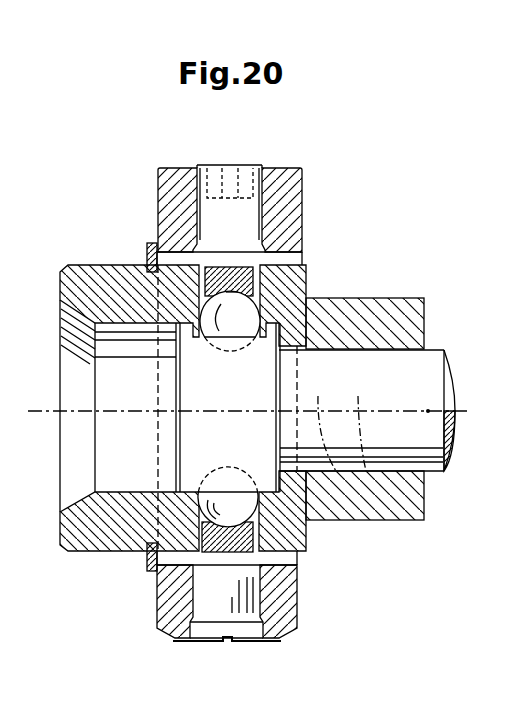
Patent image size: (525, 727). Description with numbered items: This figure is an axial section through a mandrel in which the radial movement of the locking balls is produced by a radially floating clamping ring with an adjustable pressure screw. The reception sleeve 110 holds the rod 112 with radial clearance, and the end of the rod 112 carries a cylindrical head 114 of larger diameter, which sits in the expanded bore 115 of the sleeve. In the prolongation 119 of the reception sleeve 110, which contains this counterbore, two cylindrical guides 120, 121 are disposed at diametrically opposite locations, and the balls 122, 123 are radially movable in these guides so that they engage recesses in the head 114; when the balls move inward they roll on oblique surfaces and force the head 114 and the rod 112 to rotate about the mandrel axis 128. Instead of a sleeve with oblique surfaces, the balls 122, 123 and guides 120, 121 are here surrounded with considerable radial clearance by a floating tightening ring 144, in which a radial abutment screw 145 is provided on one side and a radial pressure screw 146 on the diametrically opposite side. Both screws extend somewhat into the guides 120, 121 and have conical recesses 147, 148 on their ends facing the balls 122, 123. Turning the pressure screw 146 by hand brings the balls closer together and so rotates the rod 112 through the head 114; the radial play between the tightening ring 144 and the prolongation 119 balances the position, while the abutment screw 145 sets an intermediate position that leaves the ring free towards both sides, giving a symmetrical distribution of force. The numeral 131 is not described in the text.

The reception sleeve 110 is at (392, 299).
The rod 112 is at (452, 430).
The head 114 is at (195, 432).
The expanded bore 115 is at (110, 367).
The prolongation 119 is at (130, 282).
The guide 120 is at (271, 285).
The guide 121 is at (280, 533).
The ball 122 is at (228, 318).
The ball 123 is at (227, 500).
The mandrel axis 128 is at (428, 411).
The locking device 131 is at (312, 181).
The tightening ring 144 is at (166, 177).
The abutment screw 145 is at (218, 602).
The pressure screw 146 is at (215, 208).
The conical recess 147 is at (233, 304).
The conical recess 148 is at (228, 540).